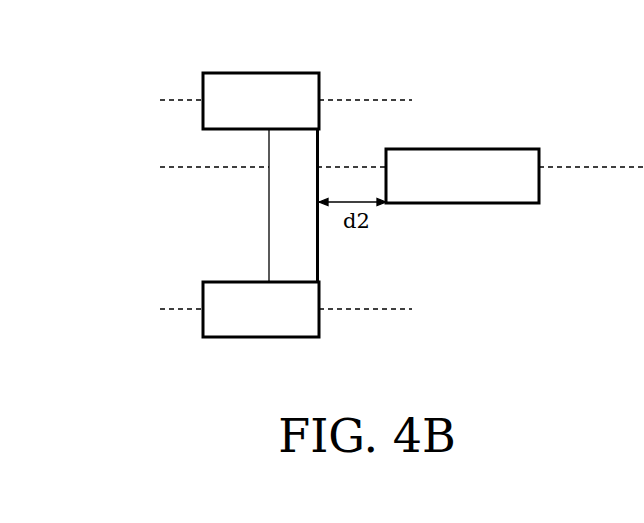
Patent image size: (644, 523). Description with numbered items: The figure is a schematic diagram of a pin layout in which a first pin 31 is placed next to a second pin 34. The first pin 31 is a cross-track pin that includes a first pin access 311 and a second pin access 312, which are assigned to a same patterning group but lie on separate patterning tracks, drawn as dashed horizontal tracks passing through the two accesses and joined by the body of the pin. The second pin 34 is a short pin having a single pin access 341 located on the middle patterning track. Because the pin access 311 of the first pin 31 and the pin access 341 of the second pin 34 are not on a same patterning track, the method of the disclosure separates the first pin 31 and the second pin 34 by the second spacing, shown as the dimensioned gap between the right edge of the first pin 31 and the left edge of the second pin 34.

The first pin 31 is at (298, 177).
The first pin access 311 is at (282, 113).
The second pin access 312 is at (282, 322).
The second pin 34 is at (499, 148).
The pin access 341 is at (483, 188).